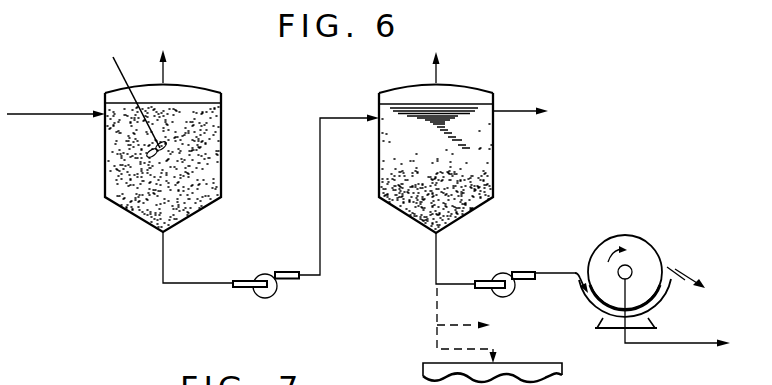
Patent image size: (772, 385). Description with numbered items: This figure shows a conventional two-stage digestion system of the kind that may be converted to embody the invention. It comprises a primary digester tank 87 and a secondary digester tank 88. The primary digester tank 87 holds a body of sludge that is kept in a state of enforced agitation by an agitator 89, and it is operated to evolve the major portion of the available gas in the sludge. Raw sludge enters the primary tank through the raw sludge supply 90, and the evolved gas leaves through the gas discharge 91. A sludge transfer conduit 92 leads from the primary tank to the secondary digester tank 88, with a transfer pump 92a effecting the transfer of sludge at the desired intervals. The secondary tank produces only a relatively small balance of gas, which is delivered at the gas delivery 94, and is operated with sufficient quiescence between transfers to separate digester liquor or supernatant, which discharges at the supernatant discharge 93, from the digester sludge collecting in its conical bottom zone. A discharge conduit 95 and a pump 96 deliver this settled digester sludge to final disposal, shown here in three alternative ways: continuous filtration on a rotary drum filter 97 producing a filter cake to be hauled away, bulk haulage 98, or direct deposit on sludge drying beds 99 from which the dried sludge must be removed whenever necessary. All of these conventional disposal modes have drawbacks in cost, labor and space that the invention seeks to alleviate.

The primary digester tank 87 is at (221, 163).
The secondary digester tank 88 is at (494, 142).
The agitator 89 is at (118, 77).
The raw sludge supply 90 is at (42, 115).
The gas discharge 91 is at (165, 73).
The sludge transfer conduit 92 is at (320, 226).
The transfer pump 92a is at (271, 297).
The supernatant discharge 93 is at (510, 108).
The gas delivery 94 is at (433, 81).
The discharge conduit 95 is at (437, 258).
The pump 96 is at (503, 274).
The rotary drum filter 97 is at (638, 236).
The bulk haulage 98 is at (462, 326).
The sludge drying beds 99 is at (511, 363).